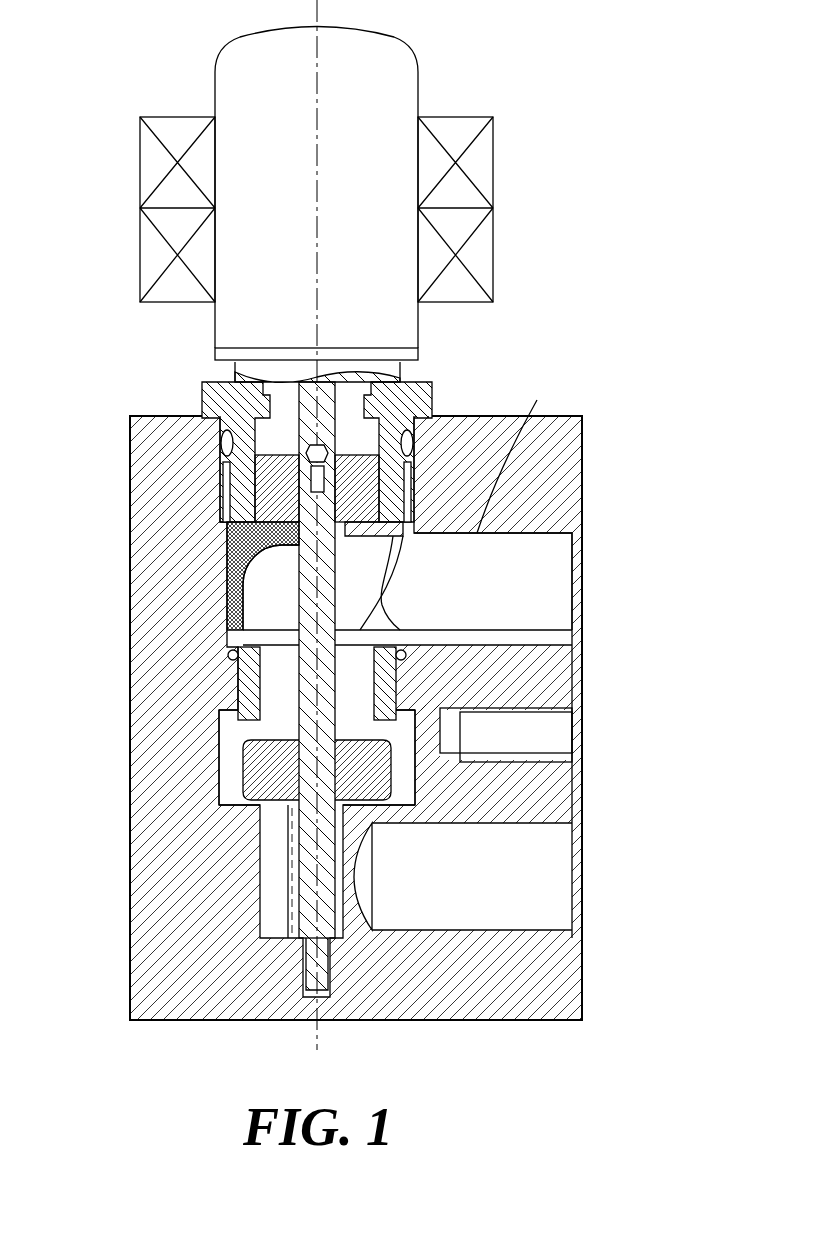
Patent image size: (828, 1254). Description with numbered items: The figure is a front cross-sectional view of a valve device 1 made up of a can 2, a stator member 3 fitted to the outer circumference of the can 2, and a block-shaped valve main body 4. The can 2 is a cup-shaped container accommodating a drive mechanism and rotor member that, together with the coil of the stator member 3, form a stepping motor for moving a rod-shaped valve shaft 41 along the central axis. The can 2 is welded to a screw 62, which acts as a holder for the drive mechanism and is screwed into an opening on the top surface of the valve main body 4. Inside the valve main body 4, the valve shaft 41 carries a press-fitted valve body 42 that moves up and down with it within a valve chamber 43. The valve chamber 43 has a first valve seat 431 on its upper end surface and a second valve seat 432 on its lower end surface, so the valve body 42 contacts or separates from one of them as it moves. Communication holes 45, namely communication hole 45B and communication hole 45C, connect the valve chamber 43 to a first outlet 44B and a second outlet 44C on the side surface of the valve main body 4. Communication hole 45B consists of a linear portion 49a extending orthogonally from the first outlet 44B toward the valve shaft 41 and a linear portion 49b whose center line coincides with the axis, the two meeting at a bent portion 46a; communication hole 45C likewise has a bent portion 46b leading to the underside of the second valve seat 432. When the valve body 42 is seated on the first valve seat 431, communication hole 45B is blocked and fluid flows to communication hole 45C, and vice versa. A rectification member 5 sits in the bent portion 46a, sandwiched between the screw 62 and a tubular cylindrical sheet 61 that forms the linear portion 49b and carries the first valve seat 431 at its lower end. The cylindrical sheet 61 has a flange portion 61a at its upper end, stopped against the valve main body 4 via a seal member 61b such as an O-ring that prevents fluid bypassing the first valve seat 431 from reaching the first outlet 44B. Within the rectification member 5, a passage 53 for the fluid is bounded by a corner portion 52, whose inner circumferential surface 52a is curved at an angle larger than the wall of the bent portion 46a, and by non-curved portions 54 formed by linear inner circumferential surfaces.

The valve device 1 is at (509, 75).
The can 2 is at (394, 42).
The stator member 3 is at (493, 160).
The valve main body 4 is at (130, 472).
The rectification member 5 is at (237, 595).
The valve shaft 41 is at (299, 663).
The valve body 42 is at (243, 782).
The valve chamber 43 is at (240, 742).
The first valve seat 431 is at (262, 715).
The second valve seat 432 is at (260, 808).
The first outlet 44B is at (575, 572).
The second outlet 44C is at (580, 887).
The communication holes 45 is at (547, 600).
The communication hole 45B is at (518, 532).
The communication hole 45C is at (550, 820).
The bent portion 46a is at (239, 553).
The bent portion 46b is at (271, 893).
The linear portion 49a is at (520, 455).
The linear portion 49b is at (450, 703).
The corner portion 52 is at (247, 574).
The inner circumferential surface 52a is at (272, 555).
The passage 53 is at (260, 610).
The non-curved portions 54 is at (572, 628).
The cylindrical sheet 61 is at (245, 678).
The flange portion 61a is at (240, 652).
The seal member 61b is at (398, 663).
The screw 62 is at (202, 394).